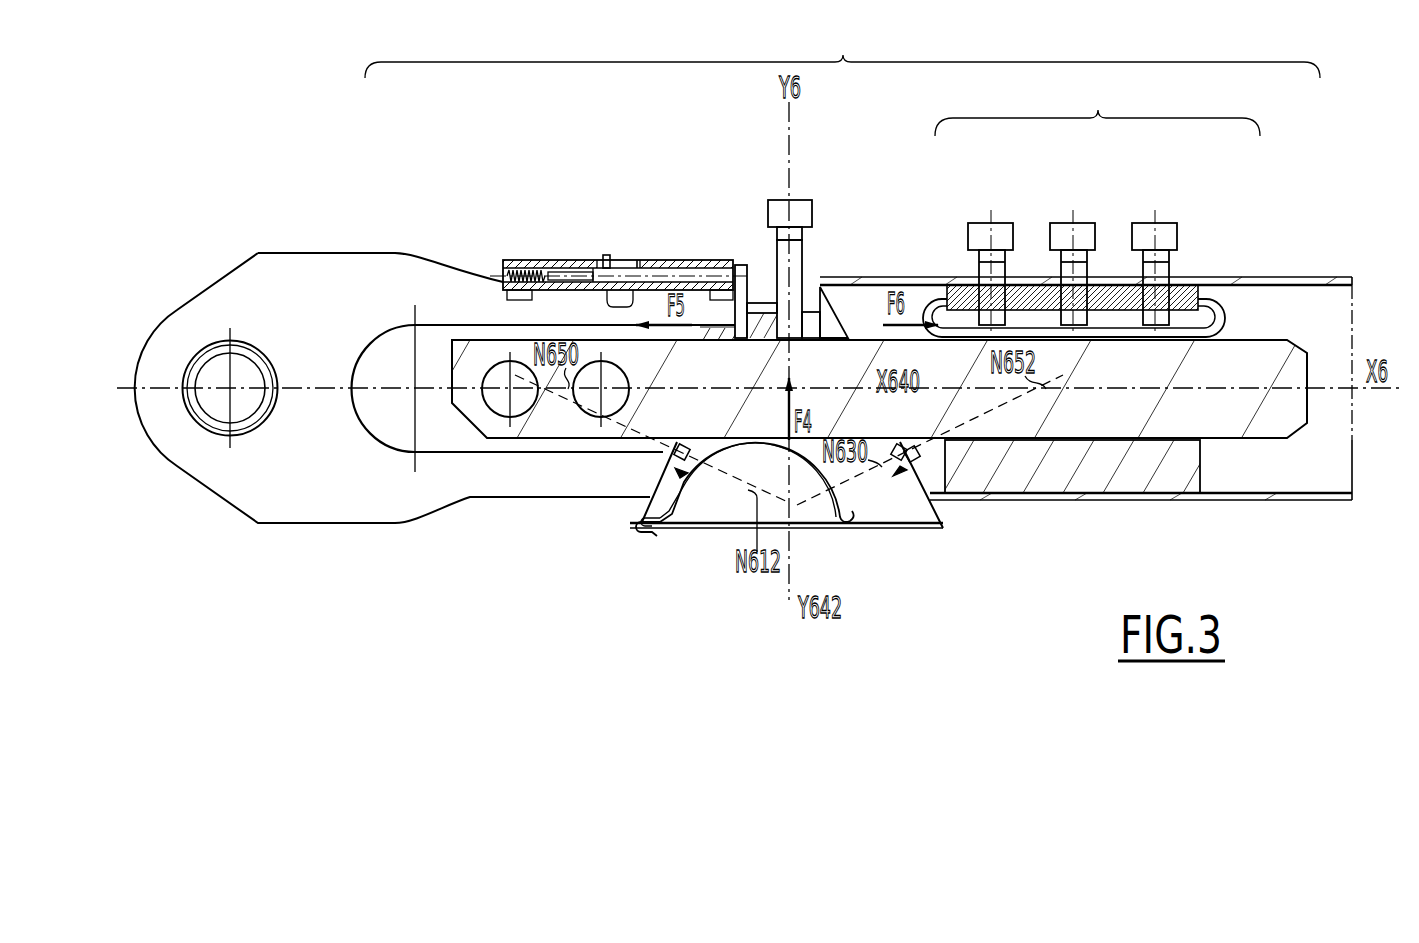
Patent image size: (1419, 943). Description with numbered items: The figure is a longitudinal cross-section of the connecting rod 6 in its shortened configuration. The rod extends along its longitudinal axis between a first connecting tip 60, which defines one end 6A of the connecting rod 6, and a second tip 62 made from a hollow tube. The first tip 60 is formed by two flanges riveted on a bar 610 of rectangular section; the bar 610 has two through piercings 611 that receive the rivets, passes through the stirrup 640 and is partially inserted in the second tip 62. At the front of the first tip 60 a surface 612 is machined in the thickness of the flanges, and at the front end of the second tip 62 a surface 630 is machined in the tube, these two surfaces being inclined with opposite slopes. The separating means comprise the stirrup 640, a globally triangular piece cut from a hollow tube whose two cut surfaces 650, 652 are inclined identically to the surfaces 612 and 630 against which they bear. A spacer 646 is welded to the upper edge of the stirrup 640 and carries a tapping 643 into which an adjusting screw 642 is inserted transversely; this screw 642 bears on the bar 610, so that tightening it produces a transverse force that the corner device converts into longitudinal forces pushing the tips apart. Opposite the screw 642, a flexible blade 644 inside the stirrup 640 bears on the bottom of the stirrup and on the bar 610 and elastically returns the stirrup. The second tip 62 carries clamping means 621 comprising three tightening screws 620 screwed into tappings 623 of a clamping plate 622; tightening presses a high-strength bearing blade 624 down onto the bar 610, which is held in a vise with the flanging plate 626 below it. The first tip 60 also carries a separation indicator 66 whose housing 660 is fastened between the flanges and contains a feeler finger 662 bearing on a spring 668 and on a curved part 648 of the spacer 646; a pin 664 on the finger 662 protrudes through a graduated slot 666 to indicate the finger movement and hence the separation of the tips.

The connecting rod 6 is at (842, 46).
The end of the connecting rod 6A is at (179, 286).
The first connecting tip 60 is at (314, 232).
The second tip 62 is at (1294, 256).
The separation indicator 66 is at (594, 199).
The bar 610 is at (1223, 407).
The through piercings 611 is at (579, 406).
The surface 612 is at (655, 537).
The tightening screws 620 is at (1140, 230).
The clamping means 621 is at (1100, 319).
The clamping plate 622 is at (963, 287).
The tappings 623 is at (977, 300).
The bearing blade 624 is at (1182, 330).
The flanging plate 626 is at (1183, 470).
The surface 630 is at (890, 478).
The stirrup 640 is at (739, 525).
The adjusting screw 642 is at (798, 212).
The tapping 643 is at (843, 324).
The flexible blade 644 is at (835, 477).
The spacer 646 is at (772, 300).
The curved part 648 is at (762, 305).
The cut surface 650 is at (655, 479).
The cut surface 652 is at (923, 471).
The housing 660 is at (670, 258).
The feeler finger 662 is at (631, 258).
The pin 664 is at (607, 257).
The graduated slot 666 is at (621, 240).
The spring 668 is at (517, 258).